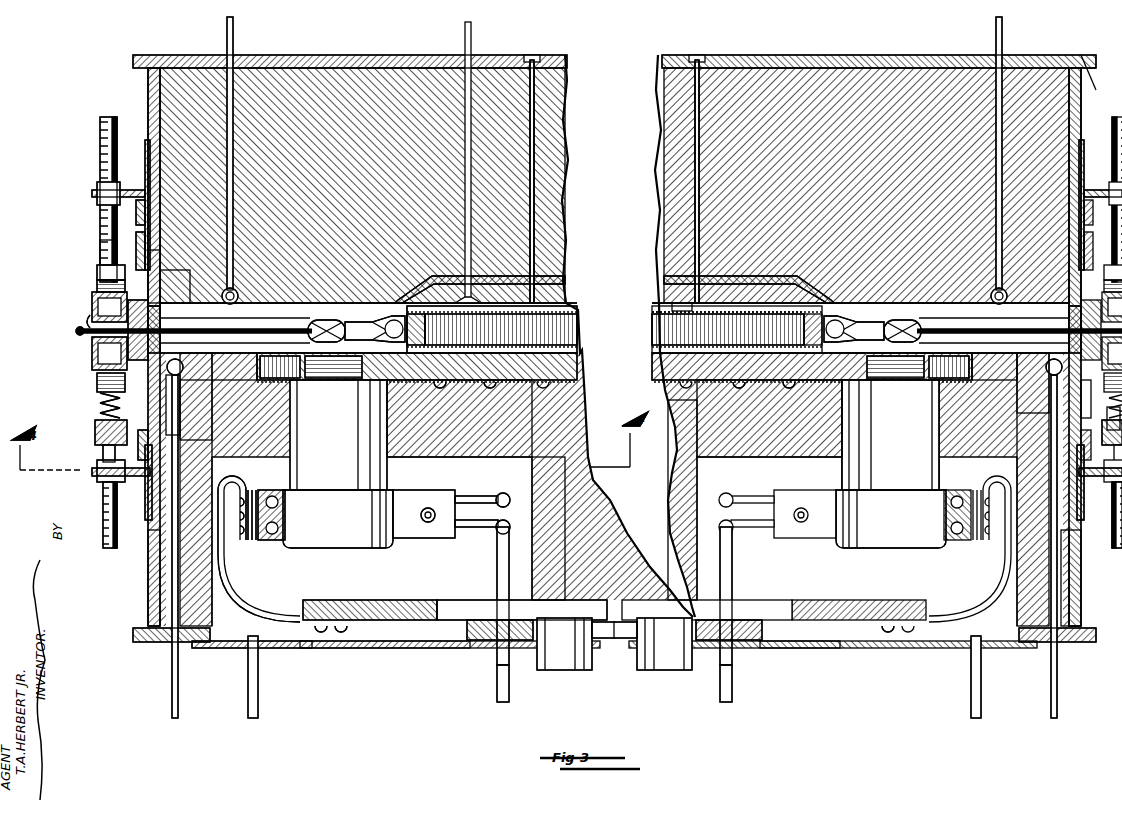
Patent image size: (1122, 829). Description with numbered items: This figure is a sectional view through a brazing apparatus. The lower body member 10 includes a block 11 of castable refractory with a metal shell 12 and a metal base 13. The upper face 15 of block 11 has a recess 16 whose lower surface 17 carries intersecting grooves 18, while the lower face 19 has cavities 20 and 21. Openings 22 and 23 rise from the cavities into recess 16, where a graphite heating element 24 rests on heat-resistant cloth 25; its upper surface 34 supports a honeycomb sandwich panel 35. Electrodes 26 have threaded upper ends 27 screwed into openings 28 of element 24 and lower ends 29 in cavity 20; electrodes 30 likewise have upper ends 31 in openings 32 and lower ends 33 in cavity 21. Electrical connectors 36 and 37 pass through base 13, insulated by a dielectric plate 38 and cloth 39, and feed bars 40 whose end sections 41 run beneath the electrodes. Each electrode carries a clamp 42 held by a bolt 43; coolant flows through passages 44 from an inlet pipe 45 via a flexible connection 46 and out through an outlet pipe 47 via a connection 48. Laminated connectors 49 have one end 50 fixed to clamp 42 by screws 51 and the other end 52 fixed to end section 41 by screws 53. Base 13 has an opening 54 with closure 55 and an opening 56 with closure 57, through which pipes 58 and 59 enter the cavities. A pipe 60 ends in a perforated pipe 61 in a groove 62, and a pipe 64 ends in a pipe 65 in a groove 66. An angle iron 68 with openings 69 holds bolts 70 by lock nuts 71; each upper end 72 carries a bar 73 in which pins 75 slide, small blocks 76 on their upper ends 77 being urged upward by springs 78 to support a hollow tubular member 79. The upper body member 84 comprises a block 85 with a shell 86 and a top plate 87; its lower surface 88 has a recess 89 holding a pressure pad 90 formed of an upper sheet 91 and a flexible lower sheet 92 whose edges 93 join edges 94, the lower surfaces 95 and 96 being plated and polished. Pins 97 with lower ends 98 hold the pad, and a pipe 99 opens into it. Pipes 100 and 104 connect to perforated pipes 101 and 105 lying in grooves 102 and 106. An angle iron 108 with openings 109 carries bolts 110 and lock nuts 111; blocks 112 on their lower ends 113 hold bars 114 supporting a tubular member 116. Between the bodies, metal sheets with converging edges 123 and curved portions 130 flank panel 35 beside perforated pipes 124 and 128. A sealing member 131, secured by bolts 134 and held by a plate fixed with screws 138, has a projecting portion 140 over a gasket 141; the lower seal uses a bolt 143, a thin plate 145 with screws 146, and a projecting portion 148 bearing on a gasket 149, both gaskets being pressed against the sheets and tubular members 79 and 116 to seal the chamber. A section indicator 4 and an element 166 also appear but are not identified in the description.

The lower body member 10 is at (126, 567).
The block 11 is at (150, 549).
The rigid metal shell 12 is at (150, 594).
The metal base 13 is at (160, 644).
The upper face 15 is at (1000, 350).
The recess 16 is at (216, 409).
The lower surface 17 is at (438, 388).
The intersecting grooves 18 is at (488, 388).
The lower face 19 is at (1081, 608).
The cavity 20 is at (530, 542).
The cavity 21 is at (708, 470).
The cylindrical openings 22 is at (390, 450).
The openings 23 is at (842, 426).
The electrical resistance heating element 24 is at (735, 388).
The layer of heat-resistant cloth material 25 is at (785, 388).
The electrode 26 is at (290, 418).
The upper end 27 is at (282, 367).
The threaded opening 28 is at (350, 367).
The lower end 29 is at (320, 548).
The electrode 30 is at (930, 418).
The upper end 31 is at (907, 367).
The threaded opening 32 is at (906, 367).
The lower end 33 is at (892, 548).
The upper surface 34 is at (272, 355).
The honeycomb sandwich panel 35 is at (474, 352).
The electrical connector 36 is at (568, 670).
The electrical connector 37 is at (665, 670).
The plate of rigid dielectric material 38 is at (525, 640).
The layer of dielectric cloth material 39 is at (614, 638).
The bar 40 is at (472, 602).
The end section 41 is at (378, 602).
The clamp 42 is at (398, 538).
The bolt 43 is at (428, 507).
The passages 44 is at (285, 513).
The inlet pipe 45 is at (497, 688).
The flexible connection 46 is at (484, 495).
The outlet pipe 47 is at (497, 661).
The flexible connection 48 is at (482, 519).
The electrical connector 49 is at (226, 570).
The end 50 is at (250, 490).
The screws 51 is at (240, 534).
The end 52 is at (306, 618).
The screws 53 is at (342, 650).
The opening 54 is at (393, 640).
The removable closure 55 is at (298, 650).
The opening 56 is at (880, 640).
The closure 57 is at (790, 648).
The pipe 58 is at (248, 679).
The pipe 59 is at (971, 667).
The pipe 60 is at (172, 682).
The pipe 61 is at (187, 405).
The groove 62 is at (187, 366).
The pipe 64 is at (1057, 686).
The pipe 65 is at (1033, 383).
The groove 66 is at (1046, 360).
The angle iron 68 is at (145, 506).
The openings 69 is at (96, 478).
The threaded bolt 70 is at (103, 509).
The lock nuts 71 is at (97, 468).
The upper end 72 is at (103, 452).
The bar 73 is at (95, 433).
The pin 75 is at (100, 418).
The small block 76 is at (97, 380).
The upper end 77 is at (100, 396).
The spring 78 is at (100, 406).
The hollow tubular member 79 is at (92, 353).
The upper body member 84 is at (1090, 86).
The block 85 is at (148, 86).
The metal shell 86 is at (1083, 72).
The metal plate 87 is at (308, 56).
The lower surface 88 is at (963, 310).
The recess 89 is at (678, 280).
The pressure pad 90 is at (788, 280).
The upper metal sheet 91 is at (758, 280).
The lower sheet 92 is at (728, 306).
The edges 93 is at (420, 284).
The edges 94 is at (842, 294).
The lower surface 95 is at (515, 280).
The lower surface 96 is at (556, 300).
The pins 97 is at (534, 182).
The lower ends 98 is at (538, 280).
The pipe 99 is at (471, 165).
The pipe 100 is at (233, 35).
The pipe 101 is at (238, 293).
The groove 102 is at (238, 300).
The pipe 104 is at (1002, 160).
The pipe 105 is at (1008, 292).
The groove 106 is at (1006, 303).
The angle iron 108 is at (145, 150).
The openings 109 is at (92, 194).
The threaded bolt 110 is at (100, 150).
The lock nuts 111 is at (97, 186).
The block 112 is at (97, 269).
The lower end 113 is at (100, 252).
The bar 114 is at (97, 285).
The hollow tubular member 116 is at (92, 301).
The converging edges 123 is at (88, 322).
The pipe 124 is at (850, 308).
The pipe 128 is at (384, 316).
The curved portions 130 is at (330, 320).
The sealing member 131 is at (154, 268).
The bolts 134 is at (140, 251).
The screws 138 is at (131, 212).
The outwardly projecting portion 140 is at (175, 286).
The flexible heat resistant gasket 141 is at (152, 312).
The bolt 143 is at (1094, 404).
The thin plate 145 is at (1107, 426).
The screws 146 is at (133, 445).
The outwardly projecting portion 148 is at (138, 362).
The flexible heat resistant gasket 149 is at (152, 342).
The shaft 166 is at (76, 331).
The section line 4 is at (330, 426).